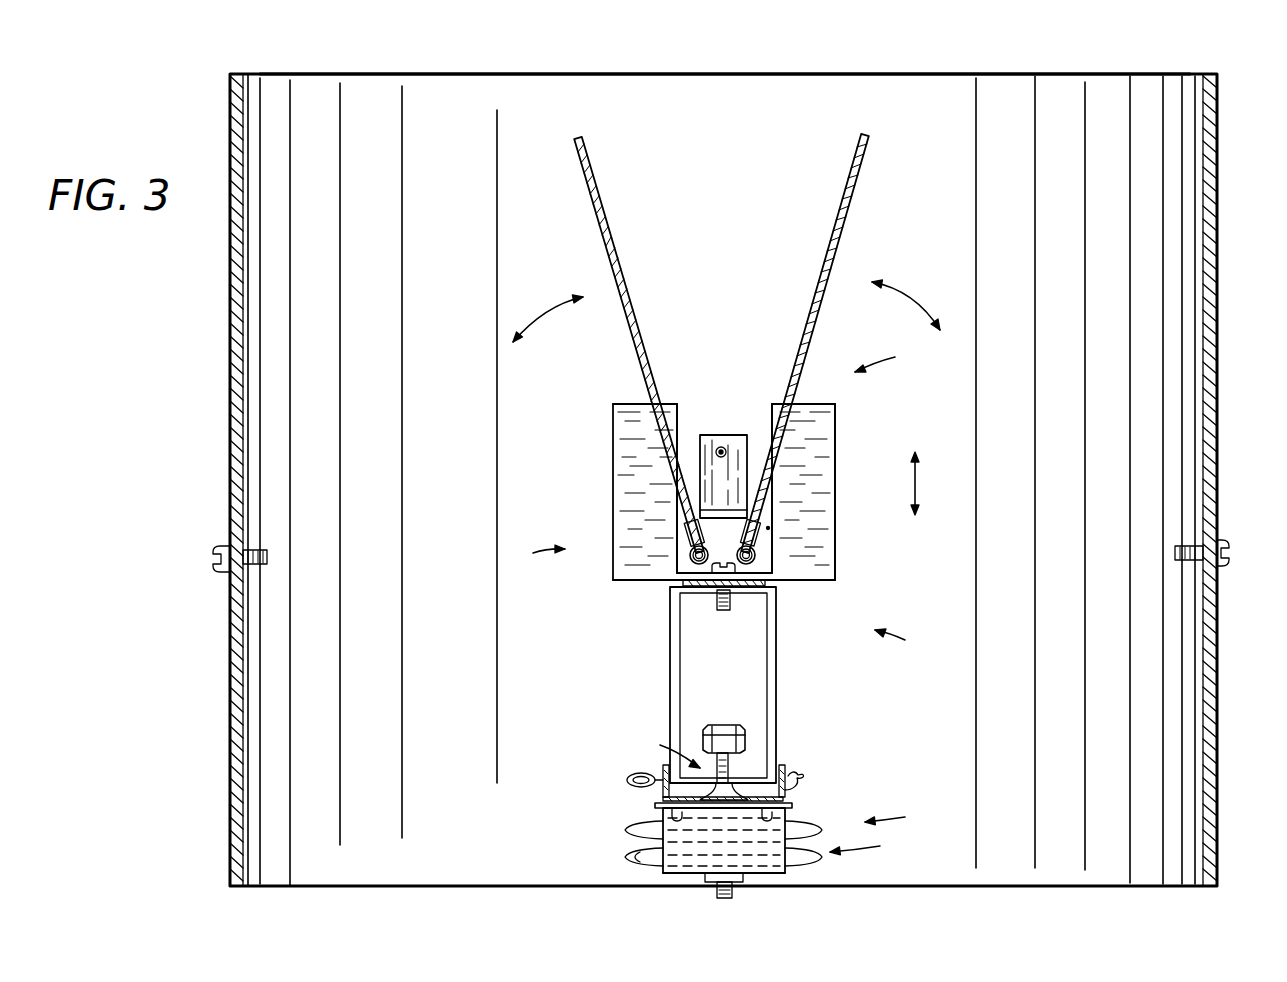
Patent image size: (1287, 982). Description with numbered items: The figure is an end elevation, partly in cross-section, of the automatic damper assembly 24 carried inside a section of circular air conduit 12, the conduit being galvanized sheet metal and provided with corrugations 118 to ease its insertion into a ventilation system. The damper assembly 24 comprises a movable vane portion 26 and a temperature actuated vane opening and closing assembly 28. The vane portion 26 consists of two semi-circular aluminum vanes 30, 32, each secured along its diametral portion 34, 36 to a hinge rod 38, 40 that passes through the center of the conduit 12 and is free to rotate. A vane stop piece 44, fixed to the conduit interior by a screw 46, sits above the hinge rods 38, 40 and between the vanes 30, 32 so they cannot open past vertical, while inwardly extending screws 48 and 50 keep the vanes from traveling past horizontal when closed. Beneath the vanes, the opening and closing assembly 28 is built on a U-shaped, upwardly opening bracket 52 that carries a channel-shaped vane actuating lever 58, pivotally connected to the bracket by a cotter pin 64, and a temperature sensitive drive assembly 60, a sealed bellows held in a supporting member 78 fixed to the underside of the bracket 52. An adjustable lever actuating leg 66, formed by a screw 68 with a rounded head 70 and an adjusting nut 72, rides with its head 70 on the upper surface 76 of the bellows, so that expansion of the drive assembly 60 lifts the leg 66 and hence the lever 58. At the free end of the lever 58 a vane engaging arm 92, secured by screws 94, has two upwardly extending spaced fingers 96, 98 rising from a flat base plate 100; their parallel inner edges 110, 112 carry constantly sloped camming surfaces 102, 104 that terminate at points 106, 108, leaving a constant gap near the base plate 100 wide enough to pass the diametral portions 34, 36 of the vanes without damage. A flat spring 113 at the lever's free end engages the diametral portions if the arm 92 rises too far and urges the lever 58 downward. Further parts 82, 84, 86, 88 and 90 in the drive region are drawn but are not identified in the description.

The circular air conduit 12 is at (1219, 217).
The corrugations 118 is at (1088, 73).
The damper assembly 24 is at (907, 644).
The movable vane portion 26 is at (894, 360).
The temperature actuated vane opening and closing assembly 28 is at (900, 817).
The movable vane 30 is at (608, 345).
The movable vane 32 is at (857, 196).
The diametral portion 34 is at (688, 561).
The diametral portion 36 is at (752, 550).
The hinge rod 38 is at (700, 568).
The hinge rod 40 is at (748, 566).
The vane stop piece 44 is at (708, 436).
The screw 46 is at (723, 450).
The inwardly extending screw 48 is at (215, 560).
The inwardly extending screw 50 is at (1228, 560).
The U-shaped bracket 52 is at (800, 783).
The vane actuating lever 58 is at (776, 695).
The temperature sensitive drive assembly 60 is at (788, 840).
The cotter pin 64 is at (627, 780).
The adjustable lever actuating leg 66 is at (661, 748).
The screw 68 is at (728, 772).
The rounded head 70 is at (790, 818).
The adjusting nut 72 is at (745, 730).
The upper surface 76 is at (662, 828).
The supporting member 78 is at (775, 875).
The upper fin 82 is at (668, 820).
The lower fin 84 is at (650, 847).
The fin edge 86 is at (658, 870).
The bottom fitting 88 is at (743, 882).
The threaded stud 90 is at (725, 899).
The vane engaging arm 92 is at (534, 552).
The screws 94 is at (750, 582).
The finger 96 is at (615, 462).
The finger 98 is at (836, 442).
The flat base plate 100 is at (836, 582).
The camming surface 102 is at (658, 430).
The camming surface 104 is at (800, 418).
The point 106 is at (668, 492).
The point 108 is at (790, 474).
The inner edge 110 is at (690, 550).
The inner edge 112 is at (771, 528).
The flat spring 113 is at (708, 578).